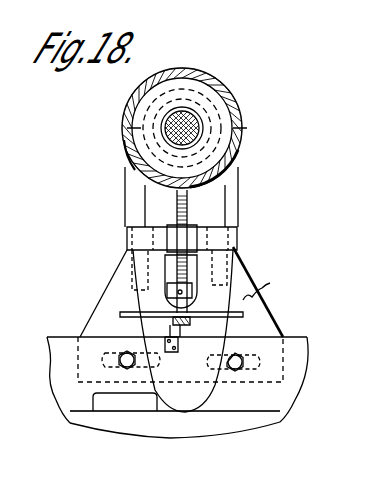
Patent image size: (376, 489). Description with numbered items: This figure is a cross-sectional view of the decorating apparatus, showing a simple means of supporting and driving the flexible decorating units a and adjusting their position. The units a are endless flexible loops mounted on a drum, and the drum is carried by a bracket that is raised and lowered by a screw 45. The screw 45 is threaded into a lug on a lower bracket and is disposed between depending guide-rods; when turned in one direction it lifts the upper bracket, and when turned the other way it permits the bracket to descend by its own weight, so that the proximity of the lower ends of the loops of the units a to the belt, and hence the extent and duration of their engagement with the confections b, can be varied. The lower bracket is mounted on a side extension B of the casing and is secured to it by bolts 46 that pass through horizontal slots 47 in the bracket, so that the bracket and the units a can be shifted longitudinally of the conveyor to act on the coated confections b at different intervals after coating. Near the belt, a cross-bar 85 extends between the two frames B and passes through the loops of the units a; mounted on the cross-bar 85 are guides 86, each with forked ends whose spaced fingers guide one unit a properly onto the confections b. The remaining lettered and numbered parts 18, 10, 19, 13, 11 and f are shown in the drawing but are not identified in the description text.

The hand wheel 18 is at (210, 92).
The wheel rim 10 is at (225, 103).
The hub 19 is at (200, 128).
The side plates 13 is at (140, 205).
The screw 45 is at (182, 272).
The guide 86 is at (270, 286).
The flexible decorating unit a is at (228, 325).
The frame body 11 is at (100, 303).
The cross-bar 85 is at (183, 352).
The side extension B is at (300, 390).
The notch f is at (137, 402).
The confection b is at (113, 410).
The horizontal slot 47 is at (105, 358).
The bolt 46 is at (125, 368).